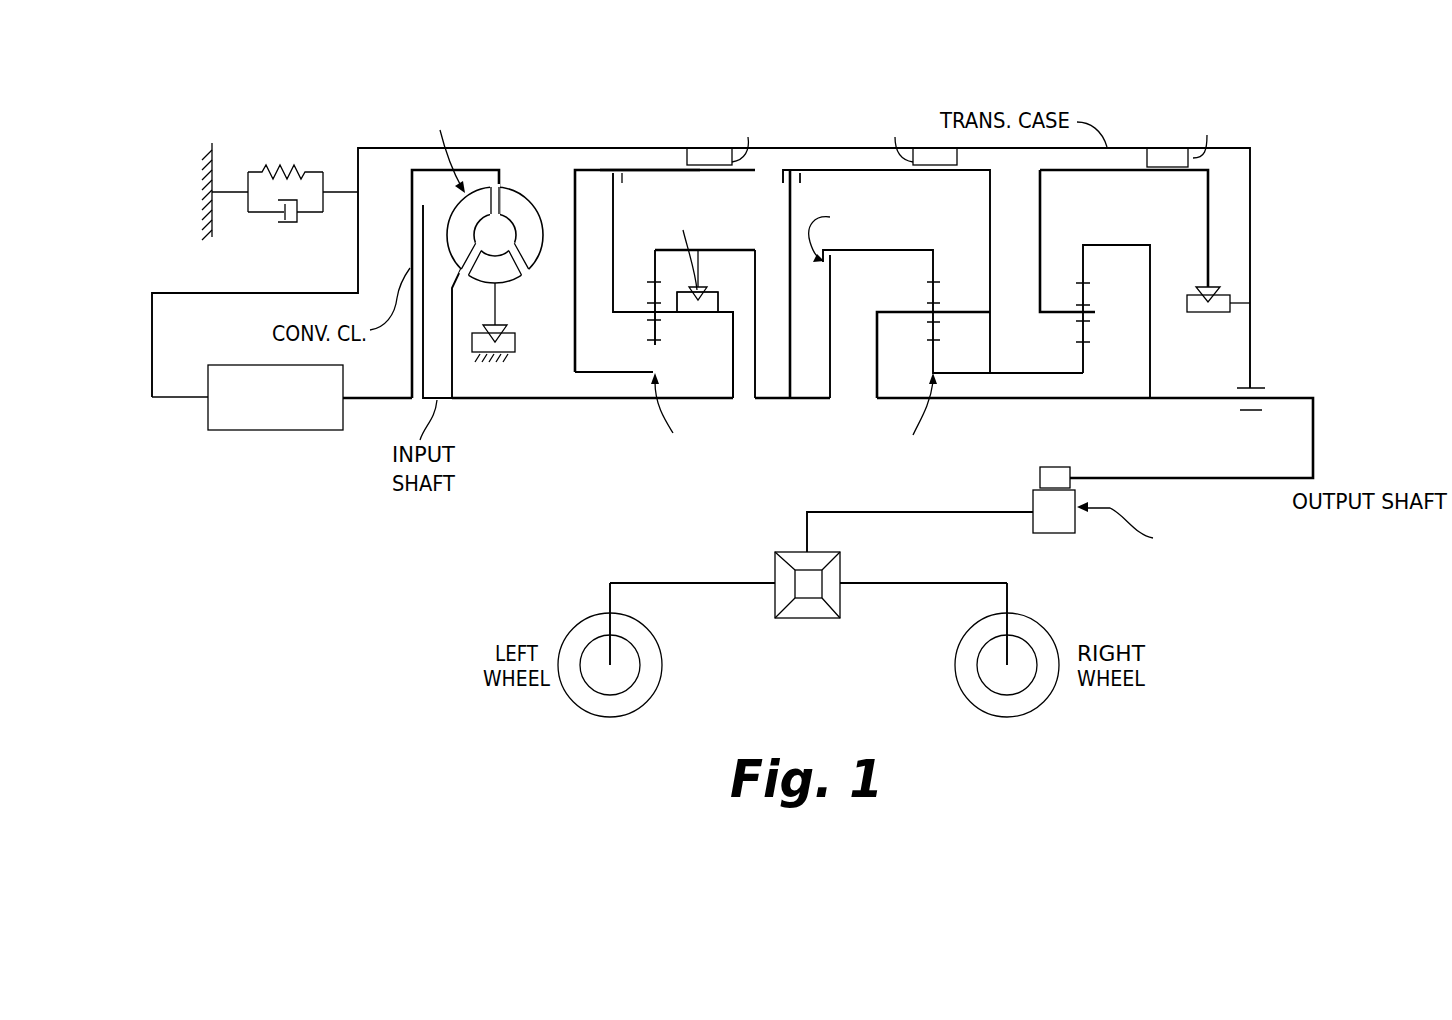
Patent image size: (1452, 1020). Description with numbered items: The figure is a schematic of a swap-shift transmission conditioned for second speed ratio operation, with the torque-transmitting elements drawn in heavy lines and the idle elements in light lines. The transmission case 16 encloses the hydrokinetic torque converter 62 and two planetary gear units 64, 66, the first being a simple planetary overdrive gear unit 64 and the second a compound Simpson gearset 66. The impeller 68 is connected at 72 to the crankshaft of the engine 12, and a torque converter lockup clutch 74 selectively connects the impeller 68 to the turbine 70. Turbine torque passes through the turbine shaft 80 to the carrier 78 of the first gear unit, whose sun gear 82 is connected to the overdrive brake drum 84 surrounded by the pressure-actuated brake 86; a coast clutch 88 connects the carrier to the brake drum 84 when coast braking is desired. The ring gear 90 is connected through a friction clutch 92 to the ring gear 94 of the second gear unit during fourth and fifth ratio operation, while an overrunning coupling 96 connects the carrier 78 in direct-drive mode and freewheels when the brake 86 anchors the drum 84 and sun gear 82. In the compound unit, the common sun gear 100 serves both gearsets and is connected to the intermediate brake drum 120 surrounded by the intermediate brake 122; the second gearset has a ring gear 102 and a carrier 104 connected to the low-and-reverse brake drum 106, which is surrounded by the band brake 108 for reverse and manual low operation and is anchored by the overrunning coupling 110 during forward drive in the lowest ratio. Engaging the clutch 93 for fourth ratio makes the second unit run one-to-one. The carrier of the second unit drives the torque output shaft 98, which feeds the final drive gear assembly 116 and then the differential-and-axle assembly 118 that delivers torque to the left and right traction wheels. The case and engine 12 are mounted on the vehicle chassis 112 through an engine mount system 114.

The engine 12 is at (255, 430).
The transmission case 16 is at (1250, 162).
The hydrokinetic torque converter 62 is at (542, 200).
The simple planetary overdrive gear unit 64 is at (640, 382).
The compound planetary gear unit 66 is at (944, 385).
The impeller 68 is at (516, 207).
The turbine 70 is at (453, 258).
The crankshaft connection 72 is at (374, 400).
The torque converter lockup clutch 74 is at (413, 232).
The carrier 78 is at (732, 312).
The turbine shaft 80 is at (555, 400).
The sun gear 82 is at (655, 363).
The overdrive brake drum 84 is at (641, 170).
The brake 86 is at (687, 162).
The coast clutch 88 is at (603, 178).
The ring gear 90 is at (665, 248).
The friction clutch 92 is at (840, 260).
The clutch 93 is at (801, 180).
The ring gear 94 is at (913, 250).
The overrunning coupling 96 is at (712, 297).
The torque output shaft 98 is at (900, 316).
The sun gear 100 is at (1055, 373).
The ring gear 102 is at (1082, 262).
The carrier 104 is at (1037, 290).
The low-and-reverse brake drum 106 is at (1113, 170).
The band brake 108 is at (1157, 162).
The overrunning coupling 110 is at (1222, 296).
The vehicle chassis 112 is at (211, 157).
The engine mount system 114 is at (263, 200).
The final drive gear assembly 116 is at (1050, 533).
The differential-and-axle assembly 118 is at (775, 567).
The intermediate brake drum 120 is at (866, 177).
The intermediate brake 122 is at (935, 172).